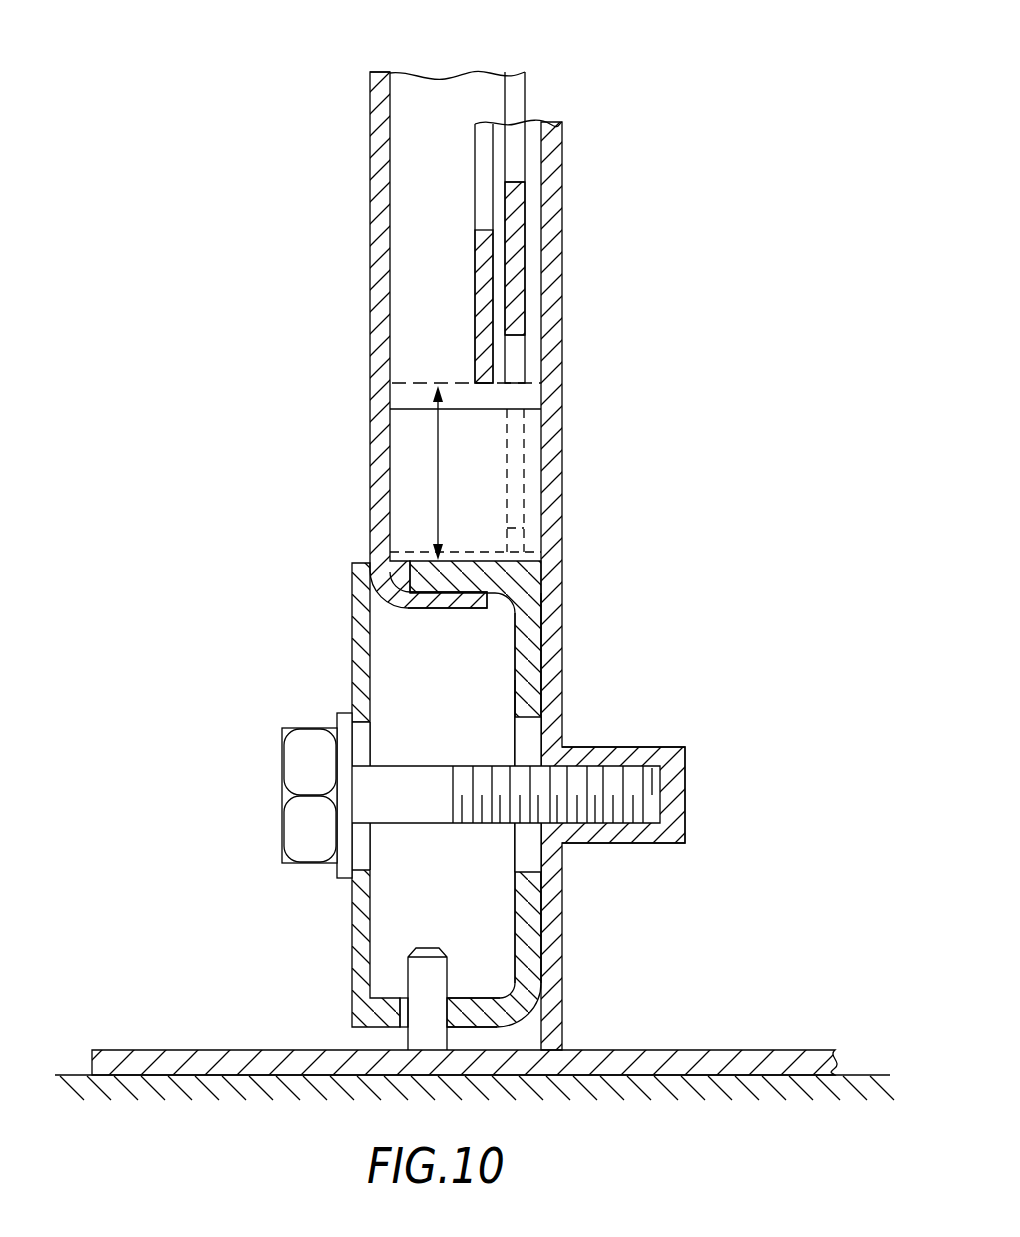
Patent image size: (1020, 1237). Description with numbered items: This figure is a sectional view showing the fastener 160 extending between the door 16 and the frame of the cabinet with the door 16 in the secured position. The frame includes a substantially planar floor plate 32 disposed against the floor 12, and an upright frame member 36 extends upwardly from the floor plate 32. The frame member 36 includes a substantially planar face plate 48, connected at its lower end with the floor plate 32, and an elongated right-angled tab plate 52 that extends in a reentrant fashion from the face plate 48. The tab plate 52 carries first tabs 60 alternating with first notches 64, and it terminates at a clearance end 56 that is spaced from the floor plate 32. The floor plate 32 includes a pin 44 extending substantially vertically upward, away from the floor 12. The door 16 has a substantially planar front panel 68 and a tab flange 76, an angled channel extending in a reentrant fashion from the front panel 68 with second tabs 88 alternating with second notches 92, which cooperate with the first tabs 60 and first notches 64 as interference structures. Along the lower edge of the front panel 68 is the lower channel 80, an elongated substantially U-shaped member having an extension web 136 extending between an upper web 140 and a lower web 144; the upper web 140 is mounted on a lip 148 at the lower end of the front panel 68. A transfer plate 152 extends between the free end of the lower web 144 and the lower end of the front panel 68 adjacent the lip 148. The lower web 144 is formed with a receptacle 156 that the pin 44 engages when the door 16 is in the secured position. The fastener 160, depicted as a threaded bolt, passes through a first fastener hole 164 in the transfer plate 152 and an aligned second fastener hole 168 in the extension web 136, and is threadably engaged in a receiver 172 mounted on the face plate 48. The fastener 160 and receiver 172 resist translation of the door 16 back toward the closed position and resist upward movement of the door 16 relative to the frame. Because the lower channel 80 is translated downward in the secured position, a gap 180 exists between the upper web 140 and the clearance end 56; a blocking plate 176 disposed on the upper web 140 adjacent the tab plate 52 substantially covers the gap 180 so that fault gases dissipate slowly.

The floor 12 is at (70, 1075).
The floor plate 32 is at (152, 1050).
The door 16 is at (403, 344).
The front panel 68 is at (371, 105).
The tab flange 76 is at (430, 72).
The lip 148 is at (441, 610).
The first notch 64 is at (483, 148).
The first tab 60 is at (483, 262).
The second notch 92 is at (515, 83).
The second tab 88 is at (520, 217).
The tab plate 52 is at (540, 116).
The frame member 36 is at (613, 586).
The face plate 48 is at (545, 136).
The receiver 172 is at (640, 843).
The second fastener hole 168 is at (541, 732).
The upper web 140 is at (500, 598).
The extension web 136 is at (512, 662).
The lower web 144 is at (463, 998).
The lower channel 80 is at (506, 702).
The transfer plate 152 is at (352, 930).
The first fastener hole 164 is at (369, 728).
The receptacle 156 is at (400, 1010).
The pin 44 is at (426, 948).
The fastener 160 is at (303, 726).
The clearance end 56 is at (490, 387).
The blocking plate 176 is at (410, 405).
The gap 180 is at (440, 478).